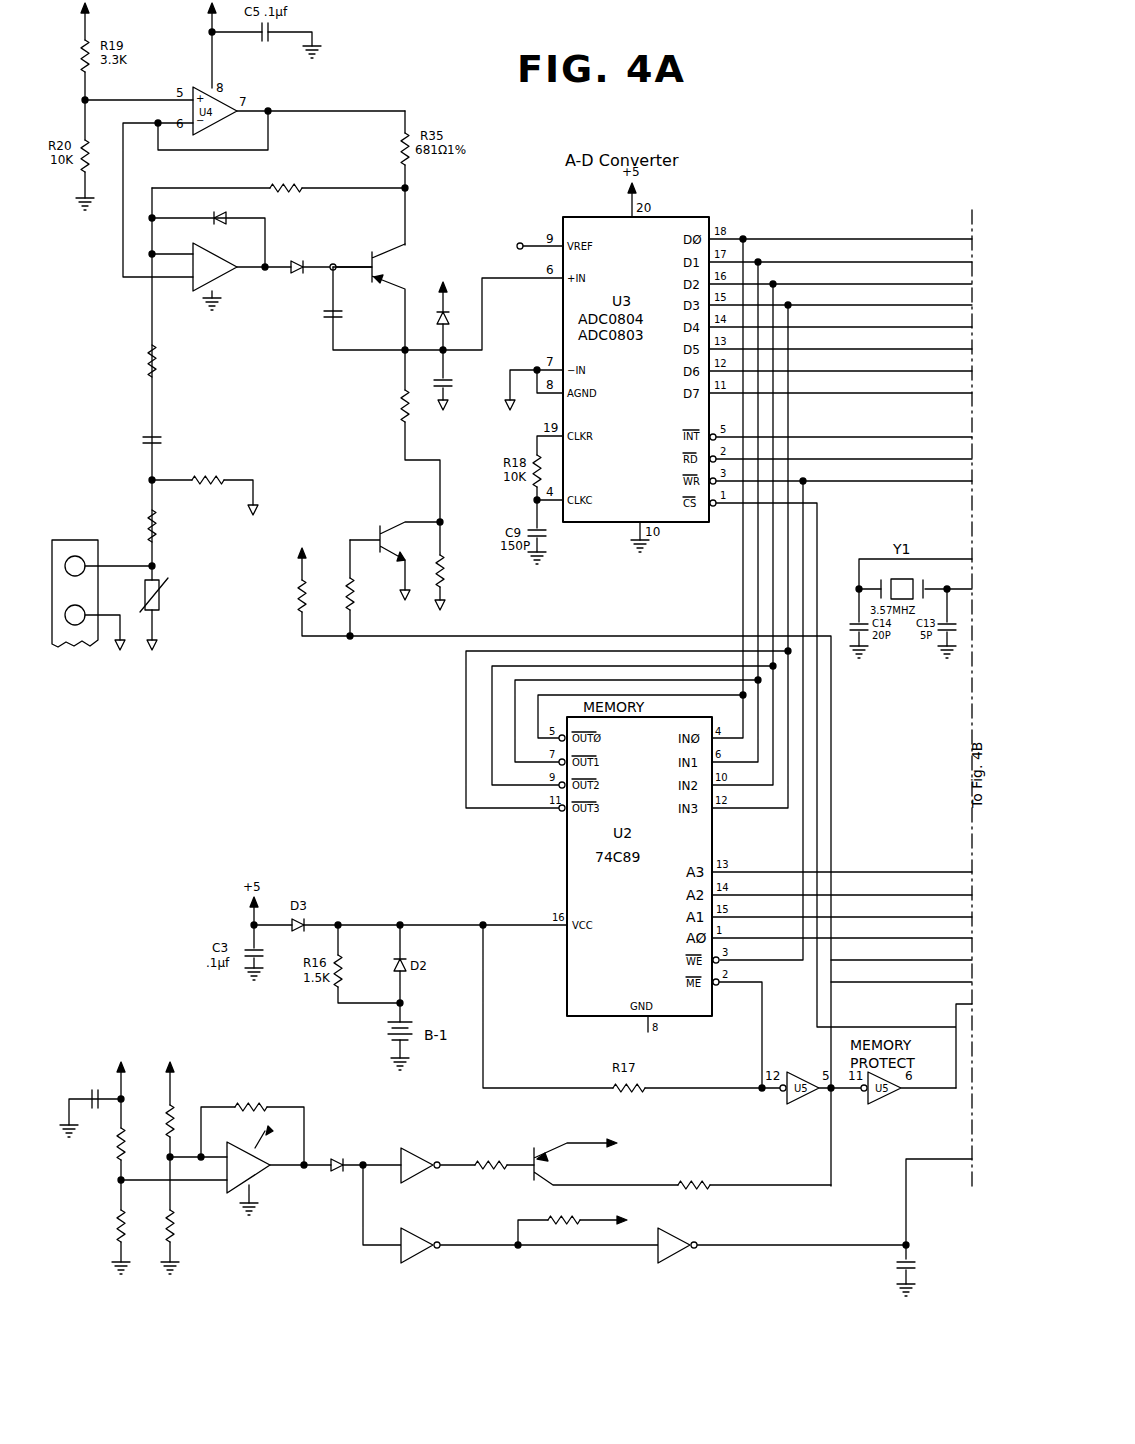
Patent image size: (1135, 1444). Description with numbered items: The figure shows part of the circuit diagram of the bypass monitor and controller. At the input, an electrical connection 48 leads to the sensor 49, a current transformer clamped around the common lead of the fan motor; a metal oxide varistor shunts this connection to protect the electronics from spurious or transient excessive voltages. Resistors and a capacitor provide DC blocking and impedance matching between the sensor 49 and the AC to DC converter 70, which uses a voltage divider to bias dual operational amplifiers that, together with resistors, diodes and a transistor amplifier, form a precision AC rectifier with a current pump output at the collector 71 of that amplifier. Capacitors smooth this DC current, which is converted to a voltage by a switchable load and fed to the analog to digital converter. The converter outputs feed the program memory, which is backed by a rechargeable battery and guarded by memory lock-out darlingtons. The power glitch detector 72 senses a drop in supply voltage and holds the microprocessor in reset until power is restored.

The electrical connection 48 is at (114, 572).
The sensor 49 is at (78, 642).
The AC to DC converter 70 is at (280, 305).
The collector 71 is at (403, 298).
The power glitch detector 72 is at (462, 1292).